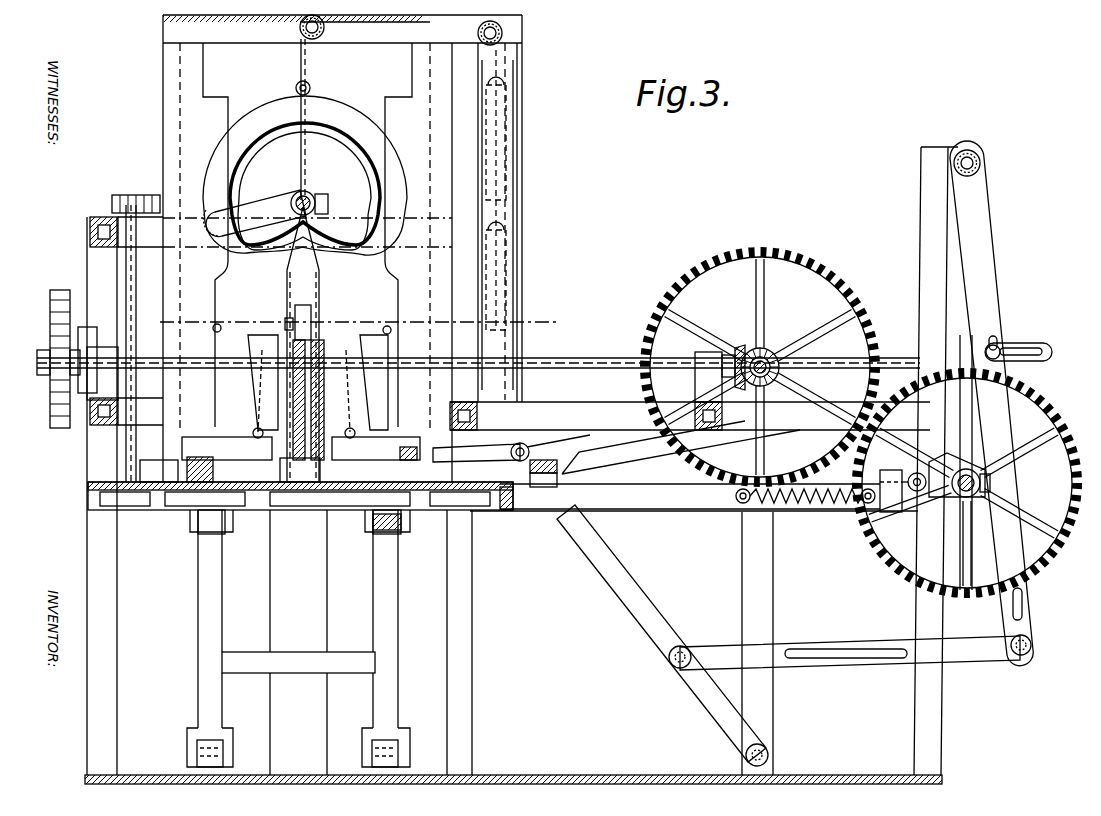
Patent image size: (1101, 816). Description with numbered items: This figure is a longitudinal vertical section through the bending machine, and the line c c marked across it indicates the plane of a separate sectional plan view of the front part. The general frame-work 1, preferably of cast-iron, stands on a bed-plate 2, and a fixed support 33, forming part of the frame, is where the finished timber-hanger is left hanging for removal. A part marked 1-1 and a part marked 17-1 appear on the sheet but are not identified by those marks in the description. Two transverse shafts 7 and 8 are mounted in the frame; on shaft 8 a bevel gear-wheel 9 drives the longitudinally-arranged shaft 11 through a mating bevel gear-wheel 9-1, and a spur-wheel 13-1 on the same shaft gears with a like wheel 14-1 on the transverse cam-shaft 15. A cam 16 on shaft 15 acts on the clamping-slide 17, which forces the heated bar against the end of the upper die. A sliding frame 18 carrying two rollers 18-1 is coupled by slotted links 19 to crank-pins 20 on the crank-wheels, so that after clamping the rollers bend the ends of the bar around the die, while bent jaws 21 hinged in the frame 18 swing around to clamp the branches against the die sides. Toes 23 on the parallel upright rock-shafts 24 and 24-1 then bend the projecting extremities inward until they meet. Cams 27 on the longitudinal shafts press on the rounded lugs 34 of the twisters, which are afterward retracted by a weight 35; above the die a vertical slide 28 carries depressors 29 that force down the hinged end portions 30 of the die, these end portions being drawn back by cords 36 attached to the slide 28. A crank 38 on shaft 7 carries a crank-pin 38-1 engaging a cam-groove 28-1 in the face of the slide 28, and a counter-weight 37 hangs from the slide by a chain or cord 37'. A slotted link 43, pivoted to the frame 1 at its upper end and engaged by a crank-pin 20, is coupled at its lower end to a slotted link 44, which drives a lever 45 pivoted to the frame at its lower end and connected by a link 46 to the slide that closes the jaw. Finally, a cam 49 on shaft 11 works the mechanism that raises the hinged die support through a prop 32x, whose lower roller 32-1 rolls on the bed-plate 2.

The general frame-work 1 is at (921, 232).
The frame bar 1-1 is at (312, 380).
The bed-plate 2 is at (323, 776).
The transverse shaft 7 is at (313, 199).
The transverse shaft 8 is at (790, 364).
The bevel gear-wheel 9 is at (772, 355).
The bevel gear-wheel 9-1 is at (742, 350).
The longitudinally-arranged shaft 11 is at (478, 373).
The spur-wheel 13-1 is at (760, 367).
The spur-wheel (crank-wheel) 14-1 is at (967, 464).
The transverse cam-shaft 15 is at (969, 493).
The cam 16 is at (959, 475).
The clamping-slide 17 is at (713, 487).
The spring 17-1 is at (795, 510).
The sliding frame 18 is at (537, 474).
The rollers 18-1 is at (362, 512).
The slotted links 19 is at (681, 447).
The crank-pins 20 is at (1002, 348).
The bent jaws 21 is at (178, 512).
The toes 23 is at (159, 471).
The upright rock-shaft 24 is at (128, 434).
The upright rock-shaft 24-1 is at (113, 205).
The cams 27 is at (290, 385).
The vertical slide 28 is at (300, 277).
The cam-groove 28-1 is at (305, 175).
The depressors 29 is at (304, 382).
The end portions of die 30 is at (301, 447).
The prop 32x is at (205, 628).
The roller 32-1 is at (190, 752).
The fixed support 33 is at (298, 642).
The rounded lugs 34 is at (253, 468).
The weight 35 is at (503, 166).
The cords or chains 36 is at (329, 394).
The counter-weight 37 is at (520, 225).
The chain or cord 37' is at (365, 35).
The crank 38 is at (256, 213).
The crank-pin 38-1 is at (225, 200).
The slotted link 43 is at (991, 403).
The slotted link 44 is at (850, 664).
The lever 45 is at (662, 635).
The link 46 is at (495, 448).
The cam 49 is at (55, 388).
The section line c is at (375, 324).